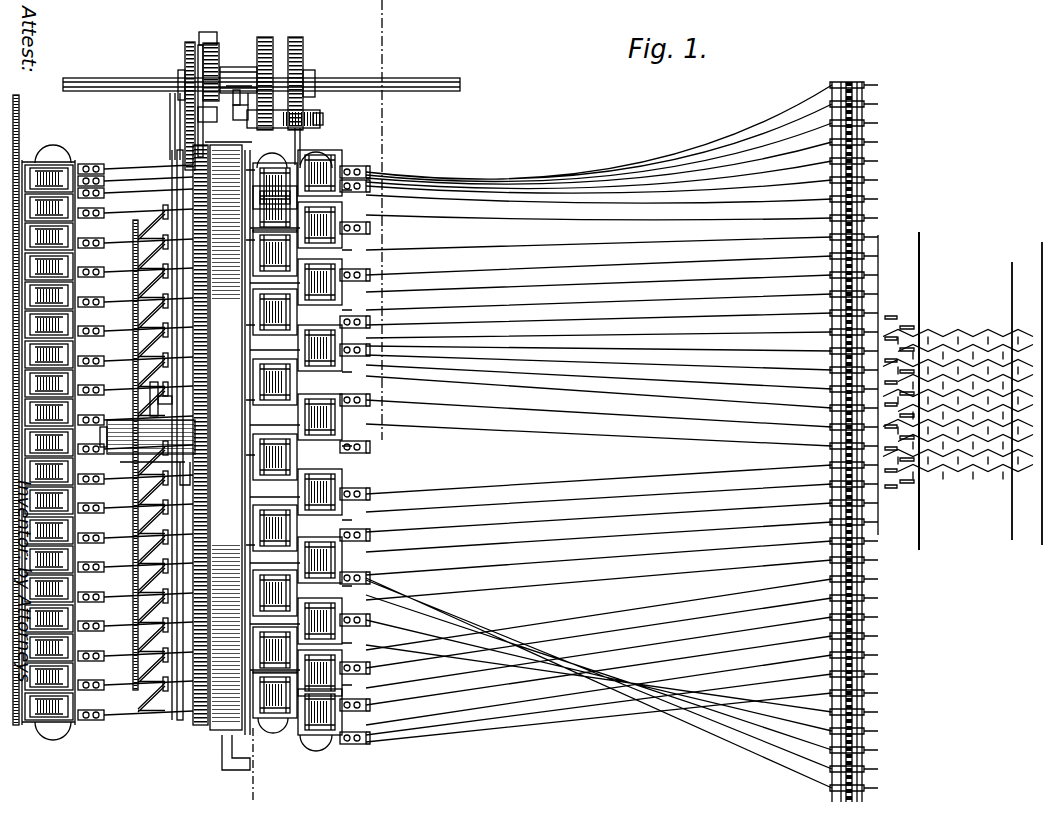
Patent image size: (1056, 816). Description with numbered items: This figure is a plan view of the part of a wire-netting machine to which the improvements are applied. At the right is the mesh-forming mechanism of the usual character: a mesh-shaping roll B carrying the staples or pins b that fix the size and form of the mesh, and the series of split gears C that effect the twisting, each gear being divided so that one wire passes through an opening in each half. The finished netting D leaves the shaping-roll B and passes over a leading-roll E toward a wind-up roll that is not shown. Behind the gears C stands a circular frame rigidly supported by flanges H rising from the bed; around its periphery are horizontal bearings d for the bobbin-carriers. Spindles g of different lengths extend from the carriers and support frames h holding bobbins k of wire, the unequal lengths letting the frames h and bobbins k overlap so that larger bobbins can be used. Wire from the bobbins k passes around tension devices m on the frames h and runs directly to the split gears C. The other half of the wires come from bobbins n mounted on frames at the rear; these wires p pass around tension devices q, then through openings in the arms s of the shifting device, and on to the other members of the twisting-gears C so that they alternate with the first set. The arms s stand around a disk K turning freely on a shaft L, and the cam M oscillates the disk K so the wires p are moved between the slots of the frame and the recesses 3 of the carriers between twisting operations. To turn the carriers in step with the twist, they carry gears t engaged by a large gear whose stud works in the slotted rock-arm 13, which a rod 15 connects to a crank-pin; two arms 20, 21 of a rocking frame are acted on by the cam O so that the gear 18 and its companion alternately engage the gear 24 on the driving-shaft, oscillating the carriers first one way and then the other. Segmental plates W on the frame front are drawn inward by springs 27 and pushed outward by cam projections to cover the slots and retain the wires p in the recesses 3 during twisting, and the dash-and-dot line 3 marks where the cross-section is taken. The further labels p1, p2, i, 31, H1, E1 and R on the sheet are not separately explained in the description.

The bobbins n is at (56, 160).
The tension devices q is at (100, 196).
The strand wires p1 is at (439, 401).
The arms s is at (152, 210).
The shaft L is at (106, 427).
The rod 15 is at (185, 114).
The rock-arm 13 is at (158, 406).
The segmental plates W is at (244, 396).
The circular disk K is at (132, 478).
The gears t is at (184, 736).
The horizontal bearings d is at (226, 437).
The springs 27 is at (245, 191).
The lower bracket H' H1 is at (236, 760).
The section line 3 is at (259, 764).
The bobbins k is at (330, 160).
The spool cap 31 is at (306, 156).
The frames h is at (290, 165).
The spindles g is at (246, 318).
The tension devices m is at (364, 694).
The wires i is at (599, 441).
The wires p is at (599, 442).
The wires p' p2 is at (599, 683).
The split gears C is at (864, 148).
The mesh-shaping roll B is at (898, 391).
The staples or pins b is at (918, 322).
The netting D is at (958, 415).
The leading-roll E is at (1027, 393).
The shaft E' E1 is at (420, 78).
The gear 24 is at (186, 57).
The cam O is at (230, 72).
The arm 20 is at (214, 32).
The arm 21 is at (197, 116).
The gear 18 is at (190, 132).
The flanges H is at (234, 120).
The cam M is at (266, 38).
The gear R is at (301, 56).